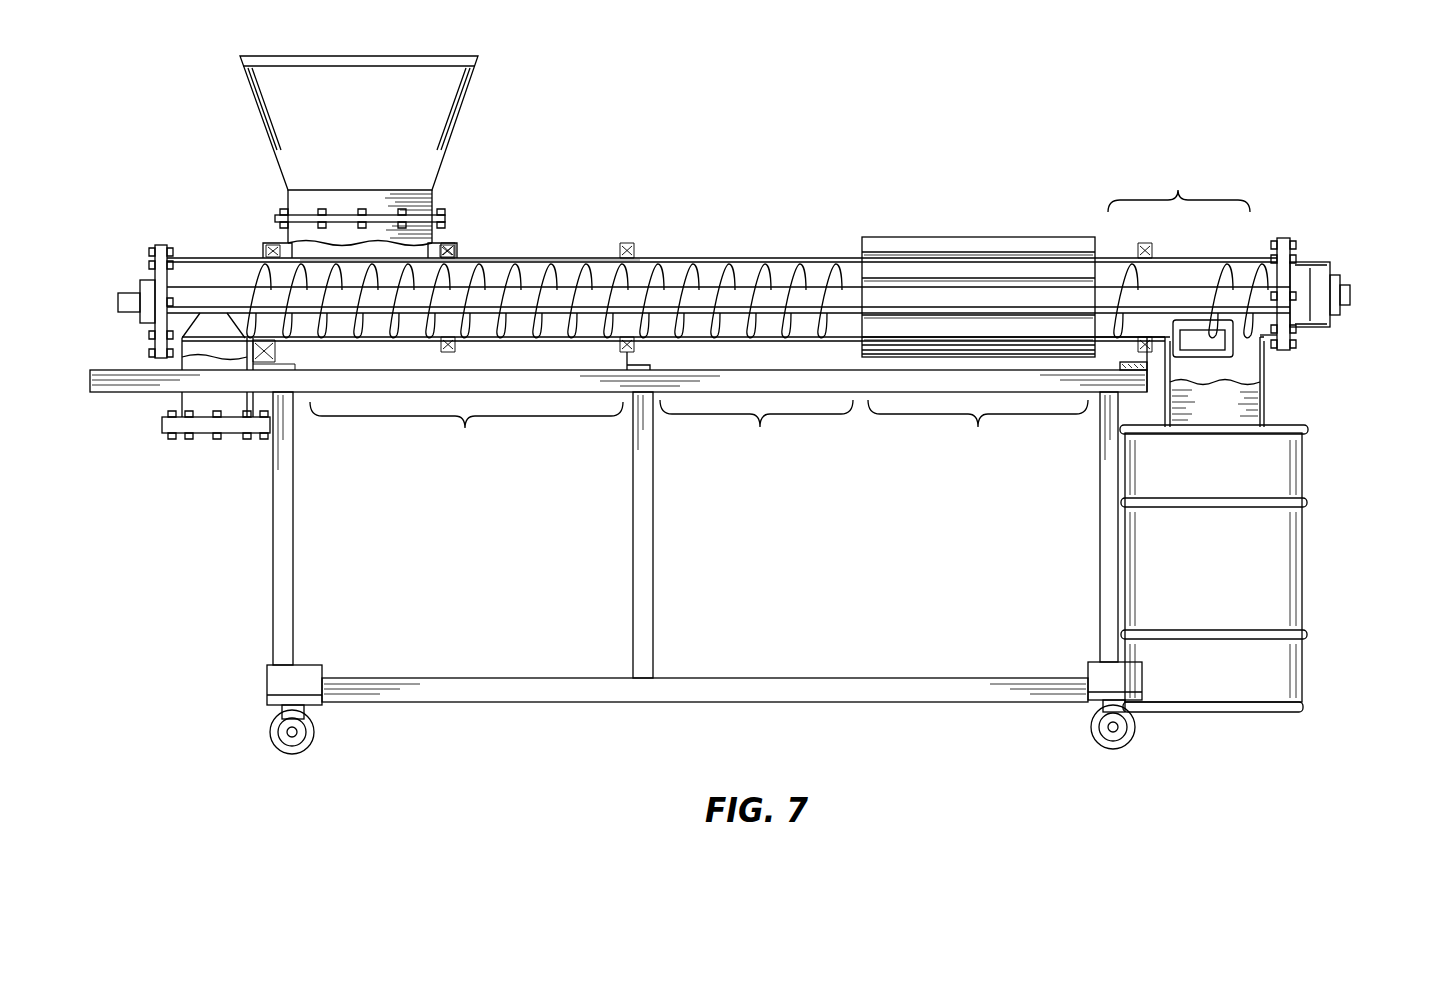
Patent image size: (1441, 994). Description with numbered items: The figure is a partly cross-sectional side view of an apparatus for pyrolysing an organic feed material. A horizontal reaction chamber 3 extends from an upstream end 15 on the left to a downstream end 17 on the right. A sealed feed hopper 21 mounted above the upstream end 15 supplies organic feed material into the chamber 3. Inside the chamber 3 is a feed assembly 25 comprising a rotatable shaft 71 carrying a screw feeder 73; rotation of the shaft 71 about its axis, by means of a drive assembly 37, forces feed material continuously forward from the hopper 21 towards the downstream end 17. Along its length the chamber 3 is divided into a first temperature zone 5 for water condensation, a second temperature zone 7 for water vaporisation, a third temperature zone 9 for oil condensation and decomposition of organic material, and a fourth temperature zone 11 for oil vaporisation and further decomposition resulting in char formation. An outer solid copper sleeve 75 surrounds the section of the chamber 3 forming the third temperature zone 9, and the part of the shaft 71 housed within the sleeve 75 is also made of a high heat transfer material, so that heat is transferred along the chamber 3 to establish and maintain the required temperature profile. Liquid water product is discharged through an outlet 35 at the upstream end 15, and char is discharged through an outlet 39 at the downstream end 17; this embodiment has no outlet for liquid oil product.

The reaction chamber 3 is at (746, 250).
The first temperature zone 5 is at (418, 419).
The second temperature zone 7 is at (712, 418).
The third temperature zone 9 is at (920, 418).
The fourth temperature zone 11 is at (1216, 192).
The upstream end 15 is at (456, 221).
The downstream end 17 is at (1273, 209).
The feed hopper 21 is at (273, 110).
The assembly 25 is at (483, 258).
The outlet 35 is at (200, 412).
The drive assembly 37 is at (1346, 261).
The outlet 39 is at (1248, 362).
The rotatable shaft 71 is at (500, 292).
The screw feeder 73 is at (661, 274).
The outer solid copper sleeve 75 is at (950, 265).